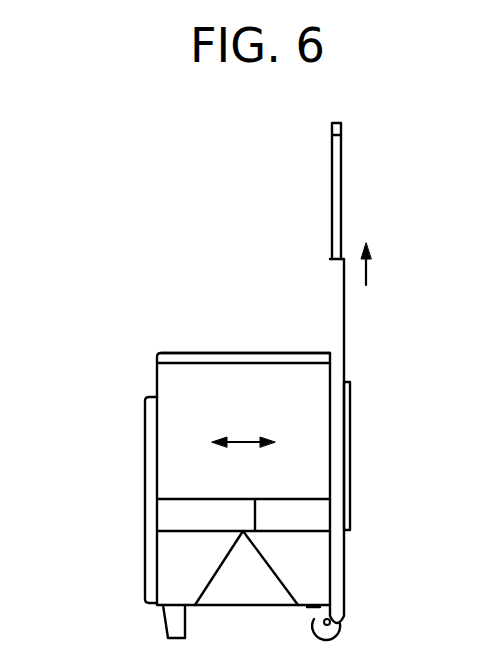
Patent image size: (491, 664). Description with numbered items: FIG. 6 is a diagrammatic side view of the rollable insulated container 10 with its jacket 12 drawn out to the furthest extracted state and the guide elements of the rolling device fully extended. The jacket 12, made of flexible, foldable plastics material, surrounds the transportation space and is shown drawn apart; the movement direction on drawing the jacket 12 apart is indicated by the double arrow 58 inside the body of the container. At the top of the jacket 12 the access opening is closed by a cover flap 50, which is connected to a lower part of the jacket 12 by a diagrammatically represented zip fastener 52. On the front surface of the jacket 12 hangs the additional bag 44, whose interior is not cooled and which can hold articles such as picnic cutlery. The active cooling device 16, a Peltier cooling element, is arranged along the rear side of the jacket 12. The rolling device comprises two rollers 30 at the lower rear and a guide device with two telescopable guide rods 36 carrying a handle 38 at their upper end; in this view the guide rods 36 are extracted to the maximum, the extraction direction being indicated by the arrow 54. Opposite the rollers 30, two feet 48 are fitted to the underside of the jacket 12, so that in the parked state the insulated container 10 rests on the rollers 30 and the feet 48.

The insulated container 10 is at (205, 214).
The jacket 12 is at (208, 389).
The active cooling device 16 is at (350, 452).
The rollers 30 is at (333, 628).
The guide rods 36 is at (332, 190).
The handle 38 is at (342, 127).
The additional bag 44 is at (150, 438).
The feet 48 is at (175, 625).
The cover flap 50 is at (275, 355).
The zip fastener 52 is at (243, 363).
The arrow 54 is at (366, 268).
The double arrow 58 is at (245, 440).